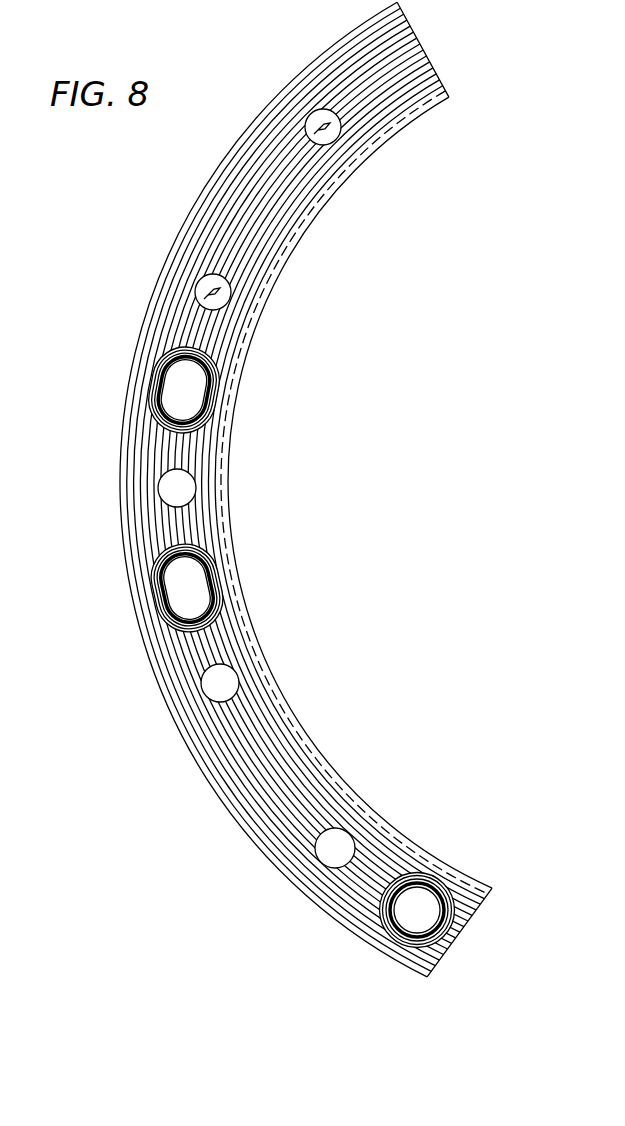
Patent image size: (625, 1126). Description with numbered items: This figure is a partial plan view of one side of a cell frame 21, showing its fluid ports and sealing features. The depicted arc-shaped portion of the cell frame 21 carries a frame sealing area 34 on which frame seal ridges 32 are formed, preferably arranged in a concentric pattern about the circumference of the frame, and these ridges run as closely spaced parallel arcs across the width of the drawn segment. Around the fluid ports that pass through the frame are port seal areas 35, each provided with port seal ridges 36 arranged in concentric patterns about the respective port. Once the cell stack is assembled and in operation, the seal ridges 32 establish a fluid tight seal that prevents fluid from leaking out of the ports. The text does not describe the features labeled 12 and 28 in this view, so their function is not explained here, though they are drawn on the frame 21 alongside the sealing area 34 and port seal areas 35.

The locating hole 12 is at (216, 284).
The cell frame 21 is at (256, 489).
The inner edge 28 is at (413, 111).
The frame seal ridges 32 is at (228, 188).
The frame sealing area 34 is at (158, 289).
The port seal areas 35 is at (215, 384).
The port seal ridges 36 is at (203, 418).